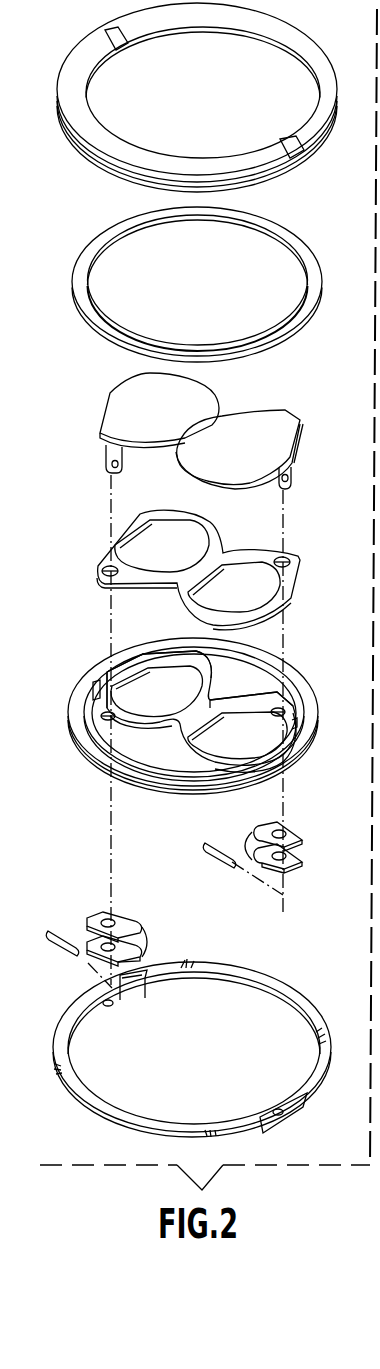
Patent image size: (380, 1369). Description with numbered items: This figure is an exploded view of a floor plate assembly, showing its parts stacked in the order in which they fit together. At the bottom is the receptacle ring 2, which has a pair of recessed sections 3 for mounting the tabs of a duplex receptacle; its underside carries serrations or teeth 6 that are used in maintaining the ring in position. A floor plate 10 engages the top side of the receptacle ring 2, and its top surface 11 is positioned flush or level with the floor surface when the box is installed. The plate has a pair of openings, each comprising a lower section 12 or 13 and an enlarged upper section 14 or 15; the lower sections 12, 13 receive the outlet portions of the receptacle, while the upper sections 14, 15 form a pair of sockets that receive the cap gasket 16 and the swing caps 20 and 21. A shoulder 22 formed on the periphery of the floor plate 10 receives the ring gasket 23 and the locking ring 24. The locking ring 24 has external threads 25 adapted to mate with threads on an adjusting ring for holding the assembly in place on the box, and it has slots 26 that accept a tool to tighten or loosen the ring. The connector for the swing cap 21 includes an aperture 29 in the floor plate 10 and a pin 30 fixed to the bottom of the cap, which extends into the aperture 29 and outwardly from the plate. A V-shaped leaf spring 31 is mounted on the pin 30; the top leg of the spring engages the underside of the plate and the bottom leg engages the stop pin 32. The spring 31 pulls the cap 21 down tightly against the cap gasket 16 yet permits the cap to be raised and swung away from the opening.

The receptacle ring 2 is at (275, 990).
The recessed sections 3 is at (128, 996).
The serrations or teeth 6 is at (196, 962).
The floor plate 10 is at (98, 762).
The top surface 11 is at (160, 756).
The lower section 12 is at (122, 688).
The lower section 13 is at (205, 732).
The enlarged upper section 14 is at (200, 676).
The enlarged upper section 15 is at (255, 692).
The cap gasket 16 is at (105, 560).
The swing cap 20 is at (120, 404).
The swing cap 21 is at (254, 420).
The shoulder 22 is at (82, 698).
The ring gasket 23 is at (290, 242).
The locking ring 24 is at (141, 160).
The external threads 25 is at (94, 160).
The slots 26 is at (113, 28).
The aperture 29 is at (285, 710).
The pin 30 is at (296, 466).
The V-shaped leaf spring 31 is at (292, 845).
The stop pin 32 is at (210, 856).